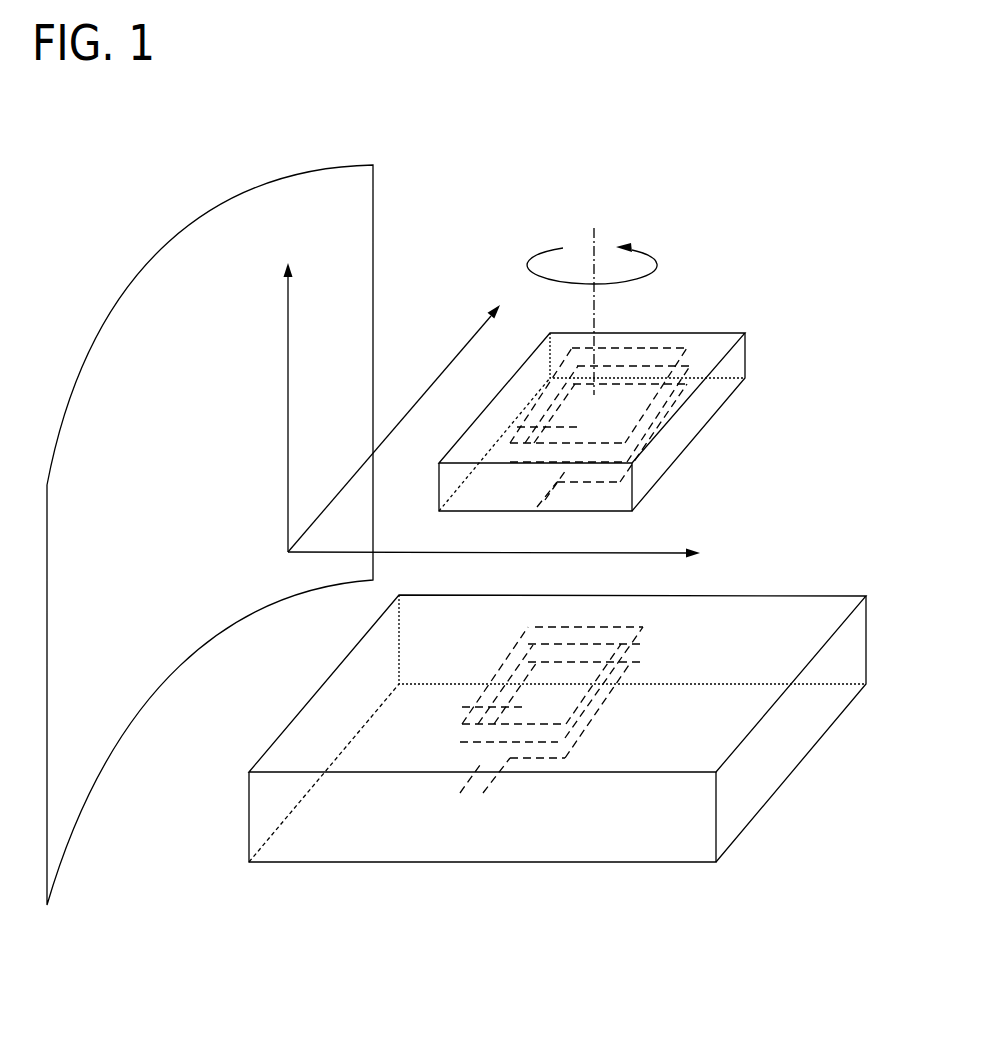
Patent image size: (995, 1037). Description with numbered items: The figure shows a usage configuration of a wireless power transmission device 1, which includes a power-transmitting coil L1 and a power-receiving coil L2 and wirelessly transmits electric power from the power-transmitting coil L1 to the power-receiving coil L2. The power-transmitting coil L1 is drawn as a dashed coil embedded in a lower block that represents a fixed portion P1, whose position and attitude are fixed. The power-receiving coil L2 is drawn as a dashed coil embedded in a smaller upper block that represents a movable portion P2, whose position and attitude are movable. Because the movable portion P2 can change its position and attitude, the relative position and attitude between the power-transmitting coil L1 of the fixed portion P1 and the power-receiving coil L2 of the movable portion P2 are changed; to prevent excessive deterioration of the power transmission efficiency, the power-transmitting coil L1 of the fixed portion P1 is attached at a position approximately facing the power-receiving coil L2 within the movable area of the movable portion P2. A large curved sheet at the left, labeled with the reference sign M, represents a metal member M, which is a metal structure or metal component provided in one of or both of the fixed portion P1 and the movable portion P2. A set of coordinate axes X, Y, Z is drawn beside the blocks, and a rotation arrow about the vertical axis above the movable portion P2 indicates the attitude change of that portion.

The wireless power transmission device 1 is at (740, 187).
The metal member M is at (150, 296).
The fixed portion P1 is at (764, 777).
The movable portion P2 is at (737, 367).
The power-transmitting coil L1 is at (638, 670).
The power-receiving coil L2 is at (655, 390).
The X axis X is at (505, 553).
The Y axis Y is at (394, 412).
The Z axis Z is at (288, 388).